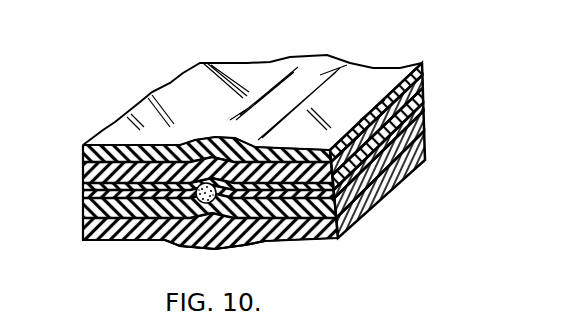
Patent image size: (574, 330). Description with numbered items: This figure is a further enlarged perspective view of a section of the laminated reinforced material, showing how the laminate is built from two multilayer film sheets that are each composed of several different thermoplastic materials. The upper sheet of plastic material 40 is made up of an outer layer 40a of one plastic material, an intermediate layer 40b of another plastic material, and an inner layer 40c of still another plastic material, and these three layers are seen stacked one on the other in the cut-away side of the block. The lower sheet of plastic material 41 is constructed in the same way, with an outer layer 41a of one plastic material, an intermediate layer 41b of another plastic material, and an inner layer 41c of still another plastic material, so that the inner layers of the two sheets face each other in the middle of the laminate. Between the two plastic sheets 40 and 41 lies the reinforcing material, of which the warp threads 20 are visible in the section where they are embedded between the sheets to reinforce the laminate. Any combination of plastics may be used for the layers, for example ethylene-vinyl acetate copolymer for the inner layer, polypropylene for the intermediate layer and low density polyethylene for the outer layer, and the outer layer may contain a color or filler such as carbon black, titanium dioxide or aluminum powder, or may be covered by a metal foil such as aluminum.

The upper sheet of plastic material 40 is at (261, 71).
The outer layer 40a is at (426, 71).
The intermediate layer 40b is at (423, 90).
The inner layer 40c is at (422, 102).
The lower sheet of plastic material 41 is at (287, 243).
The outer layer 41a is at (97, 239).
The intermediate layer 41b is at (85, 209).
The inner layer 41c is at (83, 197).
The warp threads 20 is at (166, 242).